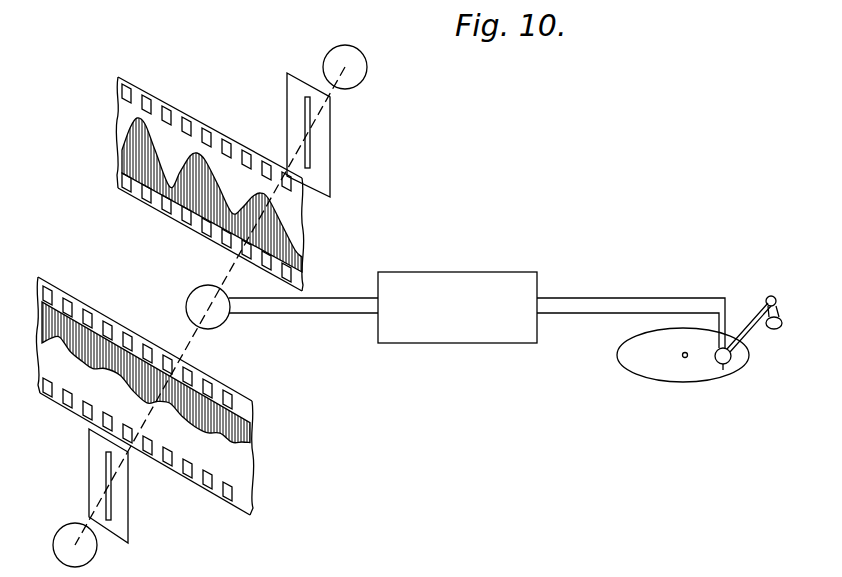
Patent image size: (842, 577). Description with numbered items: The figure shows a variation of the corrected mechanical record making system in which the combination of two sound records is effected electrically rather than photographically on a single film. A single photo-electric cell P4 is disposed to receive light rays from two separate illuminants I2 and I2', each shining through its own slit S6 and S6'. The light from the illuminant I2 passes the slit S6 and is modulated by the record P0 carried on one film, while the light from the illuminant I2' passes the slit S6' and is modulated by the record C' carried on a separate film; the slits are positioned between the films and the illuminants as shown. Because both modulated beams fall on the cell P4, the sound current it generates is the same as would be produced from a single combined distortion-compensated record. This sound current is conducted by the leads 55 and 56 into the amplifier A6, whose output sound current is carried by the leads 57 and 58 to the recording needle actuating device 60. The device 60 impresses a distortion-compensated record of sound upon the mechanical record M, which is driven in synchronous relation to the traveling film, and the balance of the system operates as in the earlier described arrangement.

The illuminant I2 is at (362, 67).
The slit S6 is at (327, 135).
The record P0 is at (270, 242).
The photo-electric cell P4 is at (215, 321).
The lead 55 is at (368, 282).
The lead 56 is at (343, 316).
The amplifier A6 is at (510, 253).
The lead 57 is at (624, 276).
The lead 58 is at (613, 315).
The recording needle actuating device 60 is at (732, 358).
The mechanical record M is at (650, 366).
The record C' is at (164, 396).
The illuminant I2' is at (60, 534).
The slit S6' is at (133, 486).